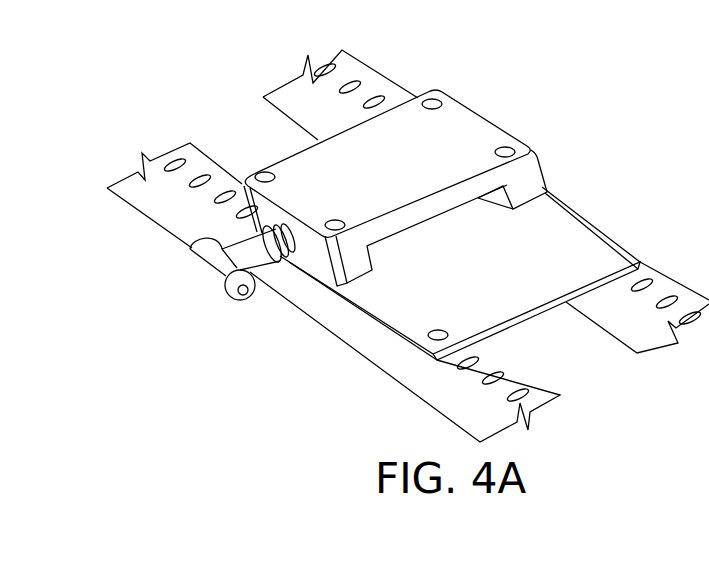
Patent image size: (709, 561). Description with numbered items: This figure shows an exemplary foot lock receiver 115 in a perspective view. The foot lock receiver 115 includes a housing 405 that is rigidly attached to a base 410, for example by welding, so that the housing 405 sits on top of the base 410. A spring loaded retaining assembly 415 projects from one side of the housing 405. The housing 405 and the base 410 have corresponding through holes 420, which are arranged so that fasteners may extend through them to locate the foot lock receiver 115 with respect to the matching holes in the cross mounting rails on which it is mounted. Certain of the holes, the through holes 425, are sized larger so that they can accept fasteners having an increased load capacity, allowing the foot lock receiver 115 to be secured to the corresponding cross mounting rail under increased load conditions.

The foot lock receiver 115 is at (389, 142).
The housing 405 is at (533, 146).
The base 410 is at (407, 323).
The spring loaded retaining assembly 415 is at (225, 279).
The through holes 420 is at (264, 176).
The through holes 425 is at (432, 104).